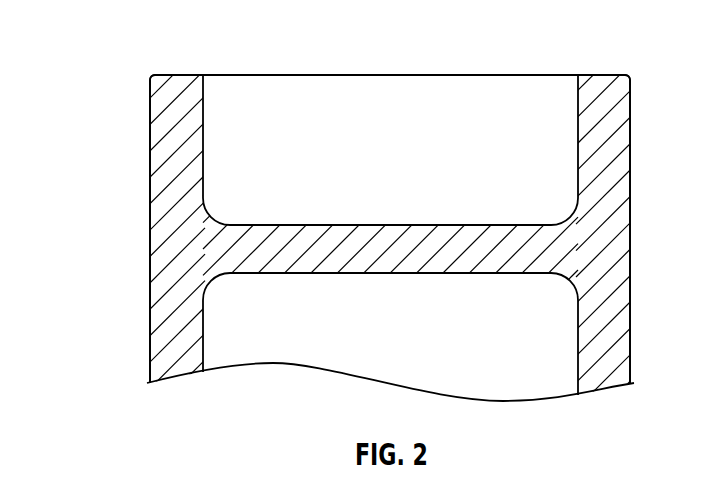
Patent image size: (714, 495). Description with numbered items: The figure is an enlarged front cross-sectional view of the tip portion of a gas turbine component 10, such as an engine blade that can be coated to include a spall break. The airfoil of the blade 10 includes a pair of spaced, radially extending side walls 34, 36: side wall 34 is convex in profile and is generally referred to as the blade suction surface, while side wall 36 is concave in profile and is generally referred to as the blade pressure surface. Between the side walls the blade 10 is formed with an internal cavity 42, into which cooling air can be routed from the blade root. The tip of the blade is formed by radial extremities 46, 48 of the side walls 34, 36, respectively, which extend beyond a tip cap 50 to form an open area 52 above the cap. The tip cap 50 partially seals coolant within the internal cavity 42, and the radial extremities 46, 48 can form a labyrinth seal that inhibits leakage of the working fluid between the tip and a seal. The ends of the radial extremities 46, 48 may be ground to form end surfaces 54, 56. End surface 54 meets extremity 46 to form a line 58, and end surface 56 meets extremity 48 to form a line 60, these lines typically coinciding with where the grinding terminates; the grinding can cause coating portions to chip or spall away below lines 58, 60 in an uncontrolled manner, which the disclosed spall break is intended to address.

The gas turbine component 10 is at (394, 51).
The side wall 34 is at (148, 264).
The side wall 36 is at (632, 304).
The internal cavity 42 is at (402, 340).
The radial extremity 46 is at (150, 157).
The radial extremity 48 is at (630, 150).
The tip cap 50 is at (340, 225).
The open area 52 is at (472, 146).
The end surface 54 is at (173, 74).
The end surface 56 is at (610, 74).
The line 58 is at (150, 77).
The line 60 is at (630, 77).